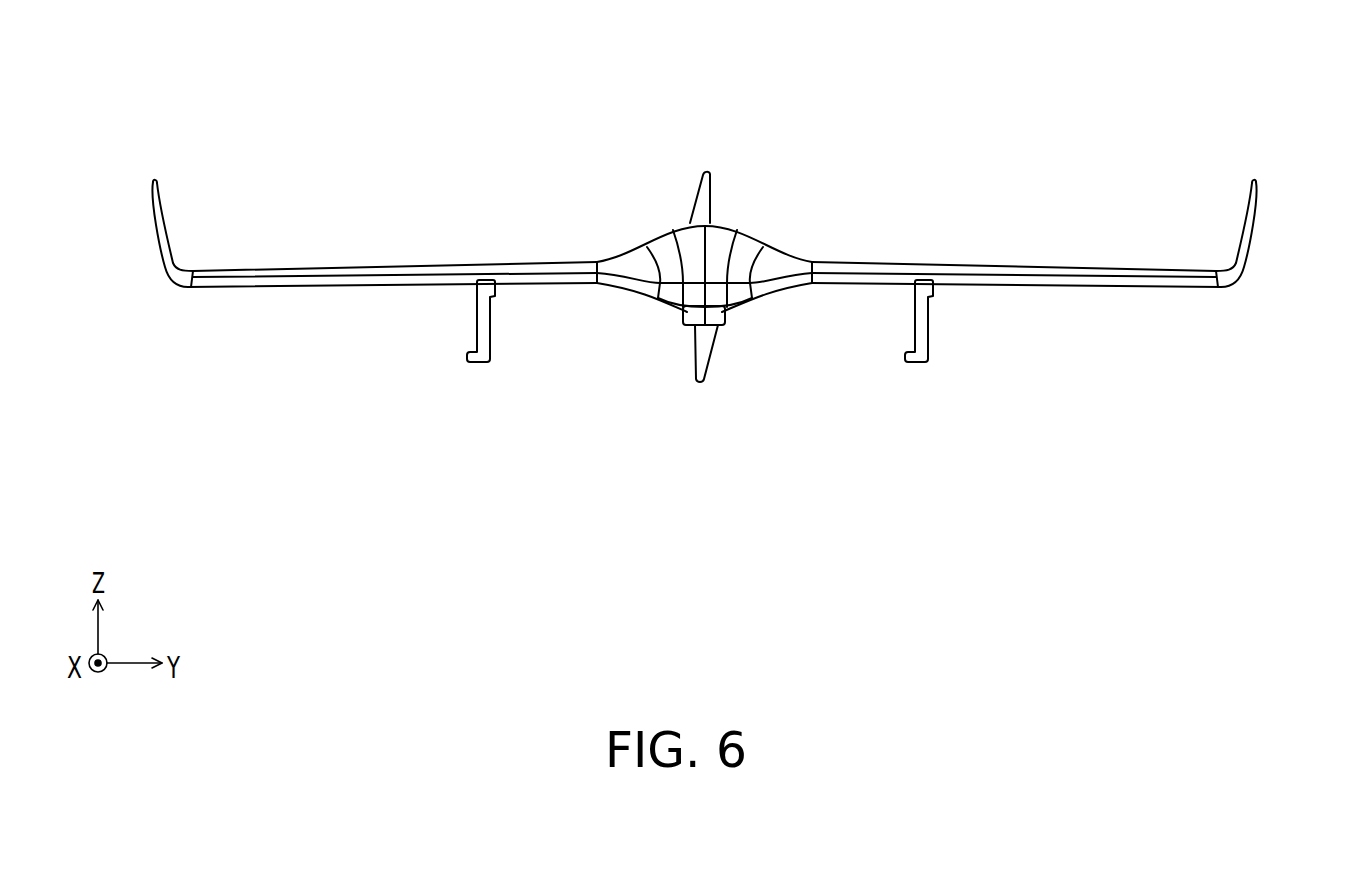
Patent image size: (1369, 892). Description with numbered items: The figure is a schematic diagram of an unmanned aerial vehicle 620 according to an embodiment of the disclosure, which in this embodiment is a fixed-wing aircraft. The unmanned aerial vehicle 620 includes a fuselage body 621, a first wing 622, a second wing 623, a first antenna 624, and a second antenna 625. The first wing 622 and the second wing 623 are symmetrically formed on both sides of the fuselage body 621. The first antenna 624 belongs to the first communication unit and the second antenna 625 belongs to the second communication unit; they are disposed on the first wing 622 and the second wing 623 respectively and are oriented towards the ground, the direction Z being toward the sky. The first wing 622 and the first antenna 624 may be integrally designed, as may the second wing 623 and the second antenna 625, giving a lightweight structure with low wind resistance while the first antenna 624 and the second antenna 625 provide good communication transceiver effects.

The unmanned aerial vehicle 620 is at (1333, 603).
The fuselage body 621 is at (740, 230).
The first wing 622 is at (380, 265).
The second wing 623 is at (1010, 265).
The first antenna 624 is at (479, 362).
The second antenna 625 is at (917, 362).